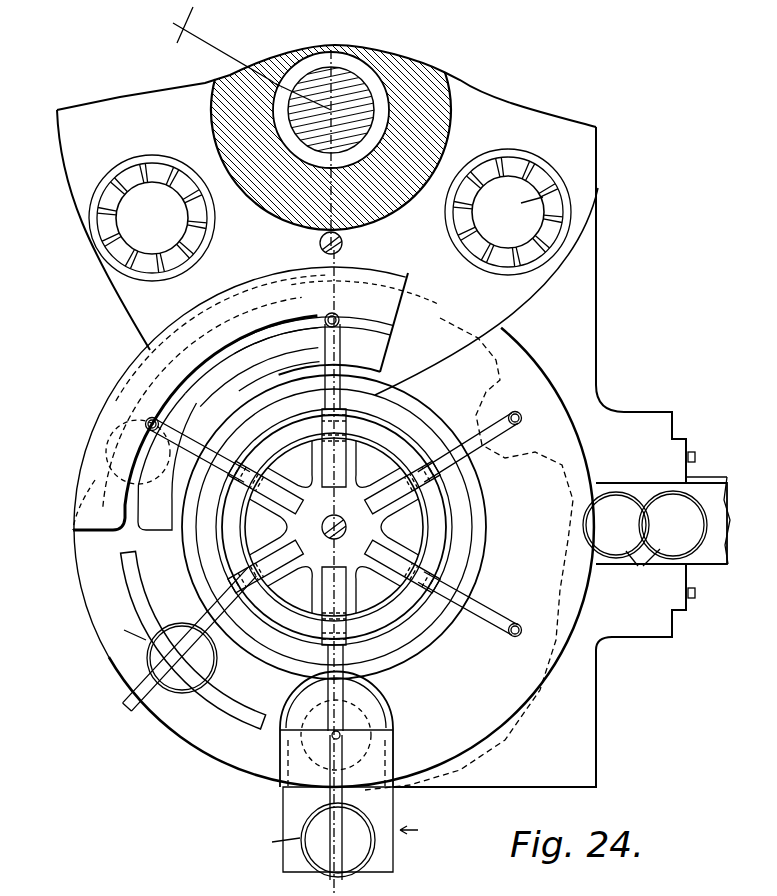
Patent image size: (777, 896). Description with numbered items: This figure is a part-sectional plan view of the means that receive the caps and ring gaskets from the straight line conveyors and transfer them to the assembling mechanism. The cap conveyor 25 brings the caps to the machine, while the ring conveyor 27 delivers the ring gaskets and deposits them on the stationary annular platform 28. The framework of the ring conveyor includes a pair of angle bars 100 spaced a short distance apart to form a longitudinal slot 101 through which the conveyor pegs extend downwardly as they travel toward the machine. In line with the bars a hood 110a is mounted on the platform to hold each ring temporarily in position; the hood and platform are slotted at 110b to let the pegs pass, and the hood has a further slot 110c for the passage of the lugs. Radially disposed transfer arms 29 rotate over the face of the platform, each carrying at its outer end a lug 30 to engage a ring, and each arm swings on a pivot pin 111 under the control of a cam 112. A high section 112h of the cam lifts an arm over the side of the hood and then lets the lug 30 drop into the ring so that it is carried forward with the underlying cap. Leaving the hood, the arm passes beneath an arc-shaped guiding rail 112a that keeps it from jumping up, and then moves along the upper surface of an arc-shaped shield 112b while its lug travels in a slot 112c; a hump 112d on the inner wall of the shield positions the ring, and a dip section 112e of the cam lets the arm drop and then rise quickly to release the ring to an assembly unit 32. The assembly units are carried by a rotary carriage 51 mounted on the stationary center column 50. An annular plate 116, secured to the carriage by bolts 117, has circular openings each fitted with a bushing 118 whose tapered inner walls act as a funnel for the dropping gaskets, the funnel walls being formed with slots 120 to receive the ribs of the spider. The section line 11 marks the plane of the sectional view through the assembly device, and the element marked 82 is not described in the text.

The section line 11 is at (349, 501).
The cap conveyor 25 is at (708, 471).
The ring conveyor 27 is at (420, 829).
The stationary annular platform 28 is at (487, 730).
The transfer arms 29 is at (470, 449).
The lug 30 is at (522, 419).
The assembly units 32 is at (132, 151).
The stationary center column 50 is at (340, 82).
The rotary carriage 51 is at (428, 96).
The spoked wheel 82 is at (373, 528).
The angle bars 100 is at (385, 806).
The longitudinal slot 101 is at (337, 800).
The hood 110a is at (282, 742).
The slot 110b is at (332, 768).
The slot 110c is at (387, 723).
The pivot pin 111 is at (397, 575).
The cam 112 is at (443, 553).
The arc-shaped guiding rail 112a is at (240, 702).
The arc-shaped shield 112b is at (118, 400).
The slot 112c is at (196, 390).
The hump 112d is at (238, 323).
The dip section 112e is at (382, 398).
The high section 112h is at (393, 625).
The annular plate 116 is at (580, 126).
The bolts 117 is at (343, 243).
The bushing 118 is at (552, 176).
The slots 120 is at (515, 170).